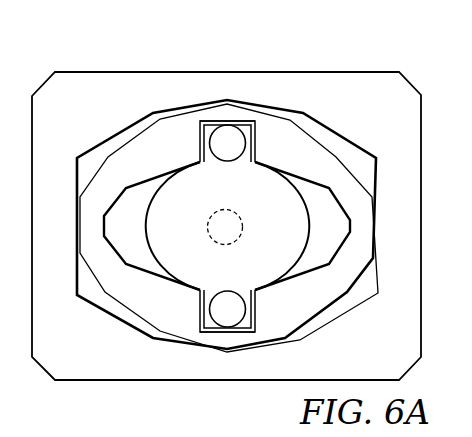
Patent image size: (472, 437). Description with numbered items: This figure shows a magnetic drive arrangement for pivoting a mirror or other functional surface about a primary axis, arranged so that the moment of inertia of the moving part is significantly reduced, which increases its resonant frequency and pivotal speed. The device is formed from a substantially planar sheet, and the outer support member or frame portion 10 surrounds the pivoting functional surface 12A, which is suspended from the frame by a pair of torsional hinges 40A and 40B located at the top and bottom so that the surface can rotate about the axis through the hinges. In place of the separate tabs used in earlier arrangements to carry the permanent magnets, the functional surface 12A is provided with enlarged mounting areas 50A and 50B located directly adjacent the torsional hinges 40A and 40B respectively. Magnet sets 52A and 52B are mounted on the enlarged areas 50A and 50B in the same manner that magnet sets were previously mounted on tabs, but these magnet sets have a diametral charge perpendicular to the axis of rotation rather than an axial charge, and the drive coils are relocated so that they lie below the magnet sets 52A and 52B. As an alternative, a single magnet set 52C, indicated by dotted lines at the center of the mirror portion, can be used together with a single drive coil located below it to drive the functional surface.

The support member or frame portion 10 is at (366, 74).
The functional surface 12A is at (195, 240).
The torsional hinge 40A is at (227, 333).
The torsional hinge 40B is at (227, 120).
The enlarged mounting area 50A is at (209, 328).
The enlarged mounting area 50B is at (209, 123).
The magnet set 52A is at (214, 308).
The magnet set 52B is at (214, 143).
The single magnet set 52C is at (244, 214).